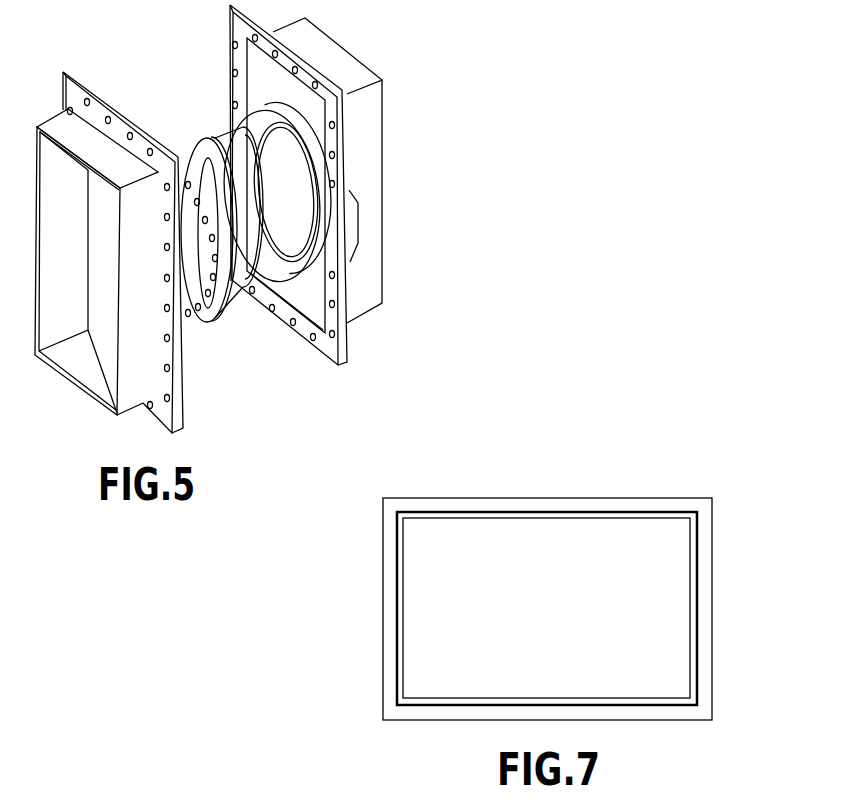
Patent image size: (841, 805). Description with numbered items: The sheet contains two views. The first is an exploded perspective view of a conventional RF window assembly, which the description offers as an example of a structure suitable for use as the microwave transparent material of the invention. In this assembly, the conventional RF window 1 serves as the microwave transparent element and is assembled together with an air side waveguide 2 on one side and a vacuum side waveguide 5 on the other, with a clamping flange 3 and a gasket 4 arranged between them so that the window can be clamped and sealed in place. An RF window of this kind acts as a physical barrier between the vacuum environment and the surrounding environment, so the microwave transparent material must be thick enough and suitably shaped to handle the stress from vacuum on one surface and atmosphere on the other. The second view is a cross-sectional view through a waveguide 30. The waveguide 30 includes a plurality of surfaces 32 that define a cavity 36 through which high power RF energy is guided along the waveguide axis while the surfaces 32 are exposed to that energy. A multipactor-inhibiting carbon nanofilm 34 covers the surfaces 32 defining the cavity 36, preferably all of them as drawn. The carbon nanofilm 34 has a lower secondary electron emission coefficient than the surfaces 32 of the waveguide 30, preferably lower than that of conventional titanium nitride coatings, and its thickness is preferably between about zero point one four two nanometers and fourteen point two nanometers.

In FIG. 5, the conventional RF window 1 is at (269, 310).
In FIG. 5, the air side waveguide 2 is at (82, 77).
In FIG. 5, the clamping flange 3 is at (214, 325).
In FIG. 5, the gasket 4 is at (321, 273).
In FIG. 5, the vacuum side waveguide 5 is at (383, 153).
In FIG. 7, the waveguide 30 is at (436, 460).
In FIG. 7, the surfaces 32 is at (712, 527).
In FIG. 7, the multipactor-inhibiting carbon nanofilm 34 is at (697, 584).
In FIG. 7, the cavity 36 is at (560, 621).